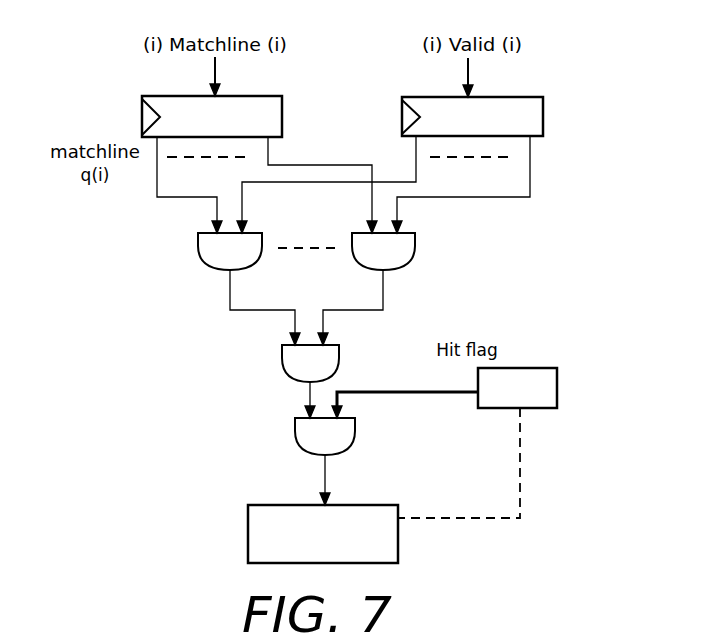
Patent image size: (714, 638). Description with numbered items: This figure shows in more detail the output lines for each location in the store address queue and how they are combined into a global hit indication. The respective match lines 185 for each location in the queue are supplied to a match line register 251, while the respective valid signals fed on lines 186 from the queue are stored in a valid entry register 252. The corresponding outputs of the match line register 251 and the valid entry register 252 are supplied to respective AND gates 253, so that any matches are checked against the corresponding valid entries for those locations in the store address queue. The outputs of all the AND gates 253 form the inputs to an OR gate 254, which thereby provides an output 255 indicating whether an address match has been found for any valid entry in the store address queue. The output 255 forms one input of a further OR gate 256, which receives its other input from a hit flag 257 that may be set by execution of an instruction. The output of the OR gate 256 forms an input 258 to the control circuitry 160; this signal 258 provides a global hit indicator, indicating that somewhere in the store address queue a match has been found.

The match lines 185 is at (214, 59).
The valid signal lines 186 is at (467, 59).
The match line register 251 is at (142, 117).
The valid entry register 252 is at (543, 117).
The AND gates 253 is at (415, 250).
The OR gate 254 is at (282, 363).
The output 255 is at (309, 396).
The OR gate 256 is at (355, 440).
The hit flag 257 is at (557, 386).
The input signal 258 is at (324, 469).
The control circuitry 160 is at (398, 538).